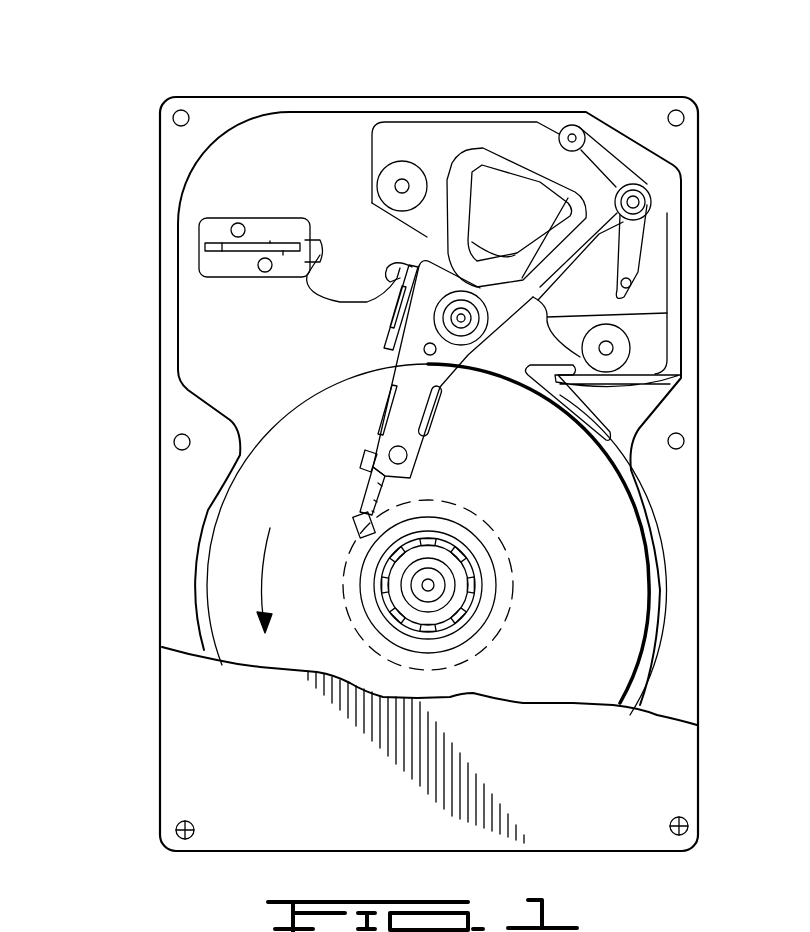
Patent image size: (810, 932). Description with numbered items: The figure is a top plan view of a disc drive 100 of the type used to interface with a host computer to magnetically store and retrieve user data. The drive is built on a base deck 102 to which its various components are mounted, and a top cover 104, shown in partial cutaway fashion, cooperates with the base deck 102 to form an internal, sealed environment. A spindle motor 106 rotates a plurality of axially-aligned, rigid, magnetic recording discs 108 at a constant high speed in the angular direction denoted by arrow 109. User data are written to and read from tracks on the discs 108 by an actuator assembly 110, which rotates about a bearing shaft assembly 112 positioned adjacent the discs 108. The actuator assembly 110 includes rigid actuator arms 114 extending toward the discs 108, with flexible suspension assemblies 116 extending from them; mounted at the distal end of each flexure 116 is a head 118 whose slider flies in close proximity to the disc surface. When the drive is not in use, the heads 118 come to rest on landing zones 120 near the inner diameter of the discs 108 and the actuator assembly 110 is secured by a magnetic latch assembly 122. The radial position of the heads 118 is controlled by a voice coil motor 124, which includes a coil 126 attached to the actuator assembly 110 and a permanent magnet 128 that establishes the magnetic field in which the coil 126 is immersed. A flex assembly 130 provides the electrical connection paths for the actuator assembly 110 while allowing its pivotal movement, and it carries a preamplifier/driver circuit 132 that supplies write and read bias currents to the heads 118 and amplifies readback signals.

The disc drive 100 is at (170, 73).
The base deck 102 is at (207, 328).
The top cover 104 is at (205, 727).
The spindle motor 106 is at (463, 573).
The magnetic recording discs 108 is at (635, 593).
The arrow 109 is at (262, 568).
The actuator assembly 110 is at (409, 399).
The bearing shaft assembly 112 is at (477, 317).
The actuator arms 114 is at (428, 423).
The flexible suspension assemblies 116 is at (370, 490).
The head 118 is at (360, 520).
The landing zones 120 is at (495, 640).
The magnetic latch assembly 122 is at (632, 240).
The voice coil motor 124 is at (512, 132).
The coil 126 is at (480, 153).
The permanent magnet 128 is at (600, 300).
The flex assembly 130 is at (321, 304).
The preamplifier/driver circuit 132 is at (392, 315).